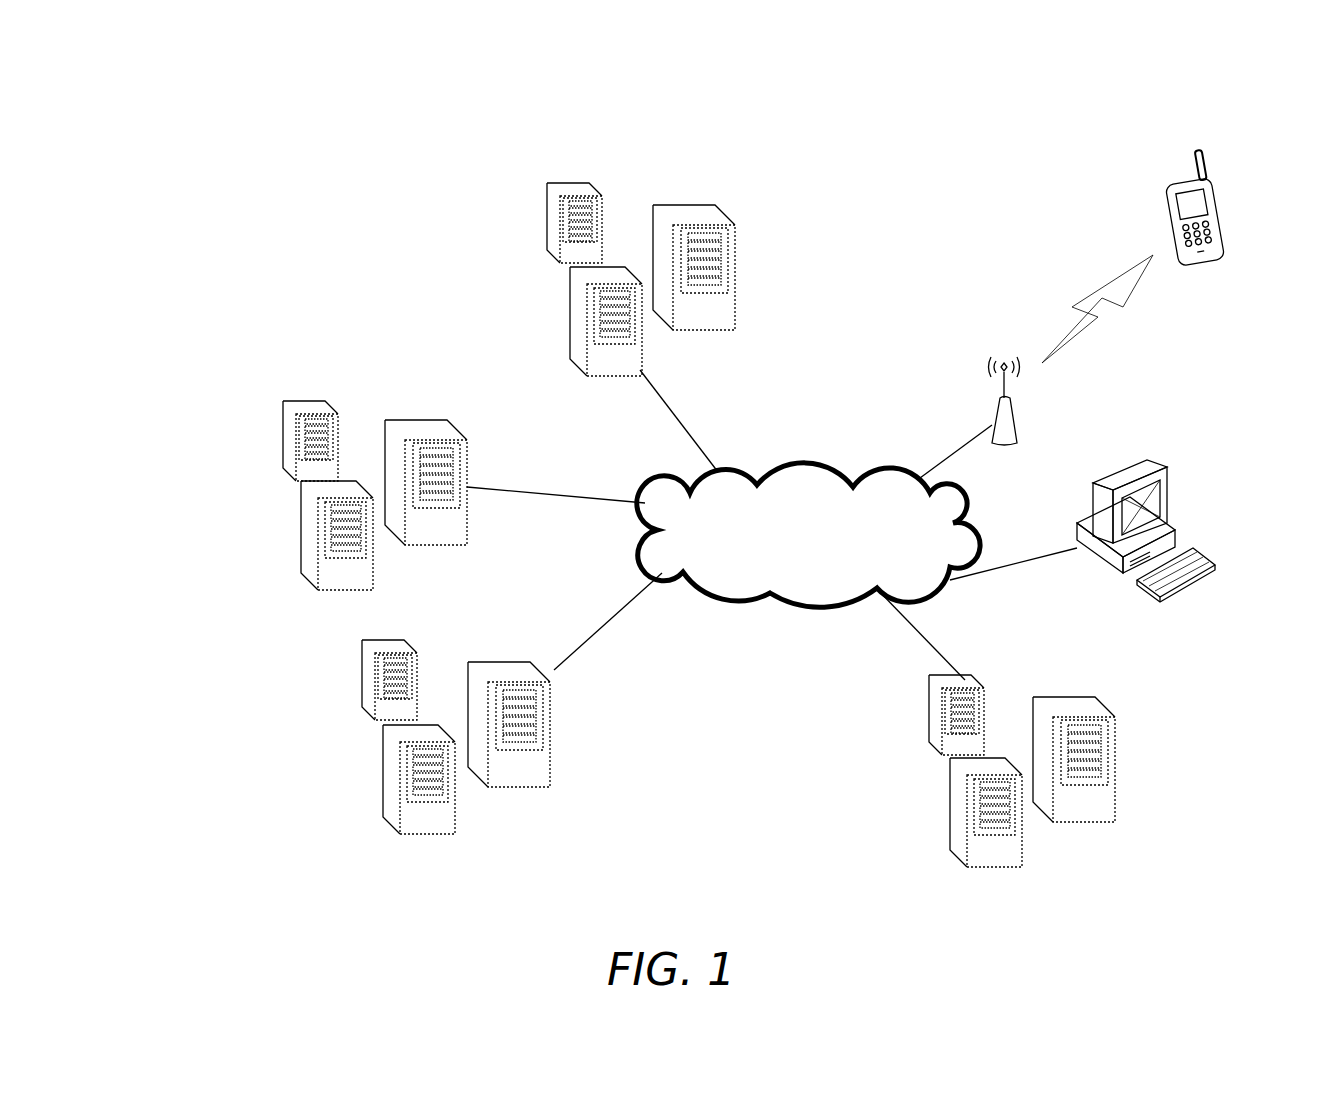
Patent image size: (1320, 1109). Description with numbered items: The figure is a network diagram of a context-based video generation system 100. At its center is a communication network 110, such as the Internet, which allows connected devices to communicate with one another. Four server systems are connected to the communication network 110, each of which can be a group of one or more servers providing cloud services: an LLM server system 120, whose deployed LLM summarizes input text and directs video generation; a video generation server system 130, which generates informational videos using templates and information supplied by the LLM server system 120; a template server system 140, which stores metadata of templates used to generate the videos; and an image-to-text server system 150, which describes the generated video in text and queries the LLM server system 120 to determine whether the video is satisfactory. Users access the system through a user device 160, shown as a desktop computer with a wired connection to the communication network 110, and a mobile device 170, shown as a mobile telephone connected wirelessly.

The system 100 is at (242, 242).
The communication network 110 is at (770, 598).
The LLM server system 120 is at (1062, 856).
The video generation server system 130 is at (345, 736).
The template server system 140 is at (262, 410).
The image-to-text server system 150 is at (540, 180).
The user device 160 is at (1192, 585).
The mobile device 170 is at (1175, 183).